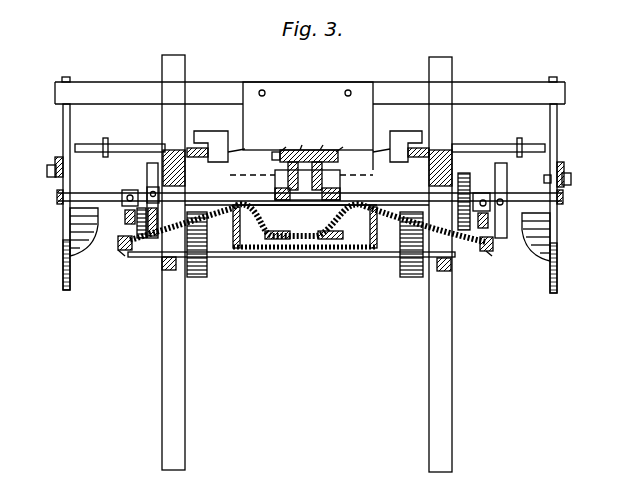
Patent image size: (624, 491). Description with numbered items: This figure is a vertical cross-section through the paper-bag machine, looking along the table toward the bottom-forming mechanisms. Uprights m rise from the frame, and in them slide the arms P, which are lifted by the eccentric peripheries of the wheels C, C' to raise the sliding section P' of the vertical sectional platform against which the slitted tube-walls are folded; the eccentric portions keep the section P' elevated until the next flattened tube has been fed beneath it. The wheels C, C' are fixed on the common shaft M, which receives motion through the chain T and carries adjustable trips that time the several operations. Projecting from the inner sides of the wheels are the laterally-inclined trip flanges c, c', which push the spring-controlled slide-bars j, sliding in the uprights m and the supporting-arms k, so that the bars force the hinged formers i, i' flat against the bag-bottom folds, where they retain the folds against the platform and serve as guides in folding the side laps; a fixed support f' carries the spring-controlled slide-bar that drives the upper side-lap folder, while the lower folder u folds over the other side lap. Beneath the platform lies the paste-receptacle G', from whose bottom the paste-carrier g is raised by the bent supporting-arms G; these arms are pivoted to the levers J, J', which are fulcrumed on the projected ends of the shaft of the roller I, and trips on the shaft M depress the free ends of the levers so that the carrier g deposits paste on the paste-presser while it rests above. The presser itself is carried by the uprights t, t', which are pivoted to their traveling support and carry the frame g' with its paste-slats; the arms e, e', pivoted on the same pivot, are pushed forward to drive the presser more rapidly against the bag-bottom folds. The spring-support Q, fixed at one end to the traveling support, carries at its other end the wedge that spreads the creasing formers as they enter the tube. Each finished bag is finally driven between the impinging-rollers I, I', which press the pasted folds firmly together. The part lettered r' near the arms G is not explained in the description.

The uprights m is at (172, 63).
The arms P is at (310, 92).
The sliding platform section P' is at (308, 116).
The eccentric wheel C is at (562, 198).
The eccentric wheel C' is at (45, 197).
The trip flange c is at (536, 237).
The bracket c' is at (89, 232).
The slide-bar j is at (96, 144).
The supporting-arm k is at (106, 141).
The shaft M is at (58, 197).
The fixed support f' is at (490, 200).
The bearing block r' is at (285, 266).
The supporting-arm G is at (307, 230).
The paste-receptacle G' is at (305, 226).
The paste-carrier g is at (304, 227).
The frame g' is at (339, 189).
The lever J is at (484, 264).
The lever J' is at (109, 261).
The impinging-roller I is at (197, 254).
The impinging-roller I' is at (411, 254).
The chain T is at (466, 178).
The hinged former i is at (409, 147).
The hinged former i' is at (207, 147).
The spring-support Q is at (310, 150).
The upright t is at (323, 143).
The upright t' is at (299, 143).
The lower folder u is at (328, 182).
The arm e is at (342, 144).
The arm e' is at (281, 144).